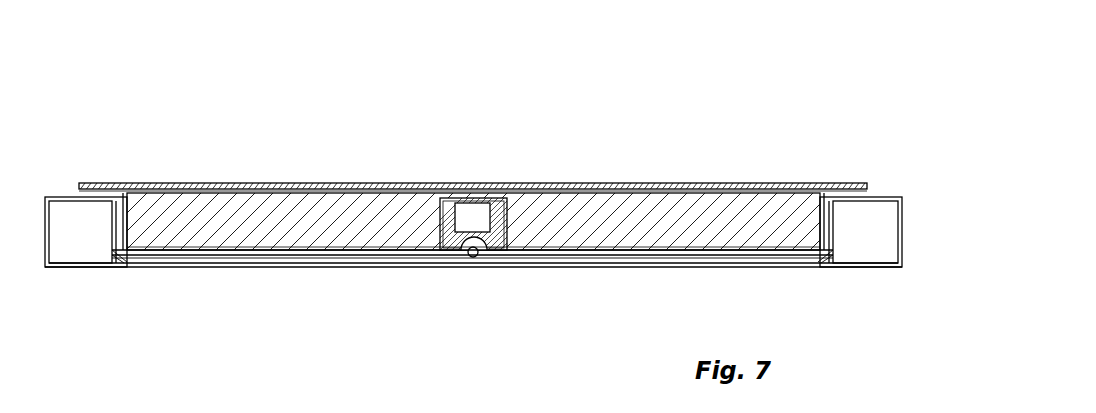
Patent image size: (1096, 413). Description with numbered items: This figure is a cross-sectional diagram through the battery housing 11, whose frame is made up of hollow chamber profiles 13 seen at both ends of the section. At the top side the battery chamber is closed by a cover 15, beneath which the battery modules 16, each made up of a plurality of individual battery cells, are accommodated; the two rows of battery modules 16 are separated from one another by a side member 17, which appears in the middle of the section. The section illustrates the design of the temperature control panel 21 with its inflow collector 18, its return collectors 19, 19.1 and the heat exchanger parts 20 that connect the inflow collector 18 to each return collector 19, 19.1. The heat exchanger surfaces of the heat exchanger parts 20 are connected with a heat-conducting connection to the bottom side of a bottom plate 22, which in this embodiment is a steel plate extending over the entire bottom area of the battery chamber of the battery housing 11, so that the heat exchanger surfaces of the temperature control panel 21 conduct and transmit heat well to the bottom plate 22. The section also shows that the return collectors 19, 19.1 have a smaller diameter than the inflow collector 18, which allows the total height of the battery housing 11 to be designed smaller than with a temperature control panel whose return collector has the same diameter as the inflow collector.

The battery housing 11 is at (200, 152).
The hollow chamber profiles 13 is at (49, 195).
The cover 15 is at (261, 180).
The battery modules 16 is at (489, 220).
The side member 17 is at (472, 198).
The inflow collector 18 is at (472, 262).
The return collector 19 is at (822, 262).
The return collector 19.1 is at (120, 265).
The heat exchanger parts 20 is at (336, 255).
The temperature control panel 21 is at (300, 262).
The bottom plate 22 is at (385, 248).